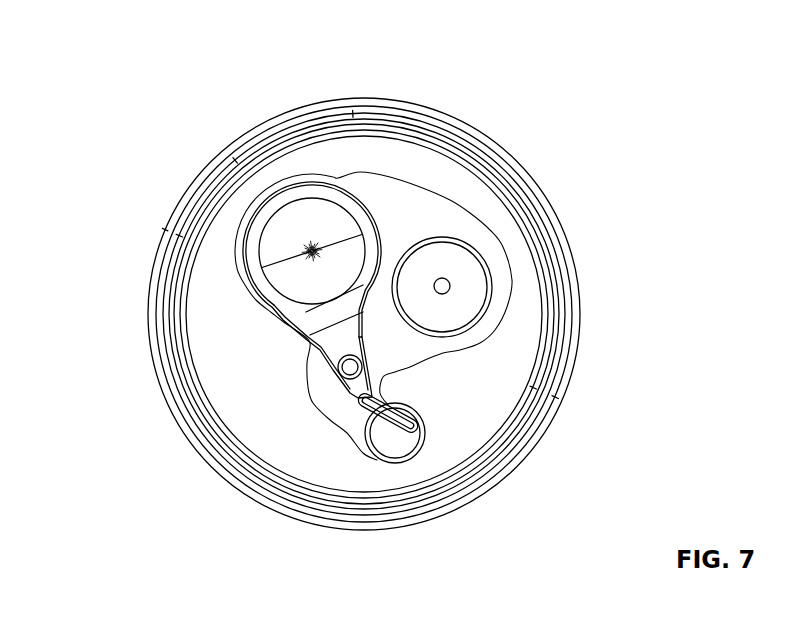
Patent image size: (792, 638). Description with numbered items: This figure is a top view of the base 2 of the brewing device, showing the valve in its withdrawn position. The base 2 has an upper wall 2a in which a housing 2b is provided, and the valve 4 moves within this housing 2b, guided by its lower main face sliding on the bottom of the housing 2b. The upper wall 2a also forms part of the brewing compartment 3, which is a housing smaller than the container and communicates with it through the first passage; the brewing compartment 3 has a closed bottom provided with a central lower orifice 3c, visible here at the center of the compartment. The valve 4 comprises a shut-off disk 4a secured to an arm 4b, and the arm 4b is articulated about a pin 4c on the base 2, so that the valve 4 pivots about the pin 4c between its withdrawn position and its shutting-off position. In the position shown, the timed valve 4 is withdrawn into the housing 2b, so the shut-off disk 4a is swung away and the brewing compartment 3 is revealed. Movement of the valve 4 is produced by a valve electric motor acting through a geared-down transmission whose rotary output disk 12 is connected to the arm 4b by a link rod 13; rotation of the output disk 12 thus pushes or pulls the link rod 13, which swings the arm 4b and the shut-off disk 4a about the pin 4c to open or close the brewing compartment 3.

The base 2 is at (150, 369).
The upper wall 2a is at (262, 407).
The housing 2b is at (418, 200).
The brewing compartment 3 is at (472, 290).
The central lower orifice 3c is at (445, 290).
The valve 4 is at (303, 189).
The shut-off disk 4a is at (278, 243).
The arm 4b is at (335, 339).
The pin 4c is at (343, 365).
The rotary output disk 12 is at (395, 440).
The link rod 13 is at (398, 418).